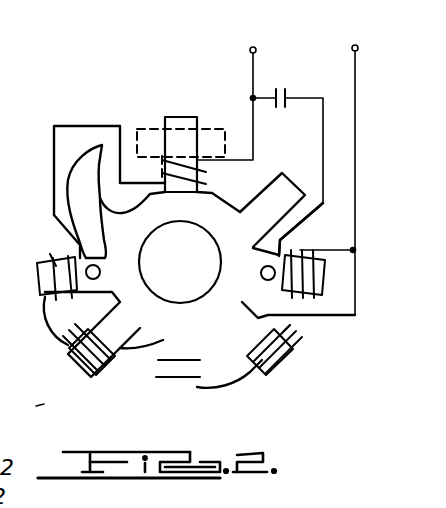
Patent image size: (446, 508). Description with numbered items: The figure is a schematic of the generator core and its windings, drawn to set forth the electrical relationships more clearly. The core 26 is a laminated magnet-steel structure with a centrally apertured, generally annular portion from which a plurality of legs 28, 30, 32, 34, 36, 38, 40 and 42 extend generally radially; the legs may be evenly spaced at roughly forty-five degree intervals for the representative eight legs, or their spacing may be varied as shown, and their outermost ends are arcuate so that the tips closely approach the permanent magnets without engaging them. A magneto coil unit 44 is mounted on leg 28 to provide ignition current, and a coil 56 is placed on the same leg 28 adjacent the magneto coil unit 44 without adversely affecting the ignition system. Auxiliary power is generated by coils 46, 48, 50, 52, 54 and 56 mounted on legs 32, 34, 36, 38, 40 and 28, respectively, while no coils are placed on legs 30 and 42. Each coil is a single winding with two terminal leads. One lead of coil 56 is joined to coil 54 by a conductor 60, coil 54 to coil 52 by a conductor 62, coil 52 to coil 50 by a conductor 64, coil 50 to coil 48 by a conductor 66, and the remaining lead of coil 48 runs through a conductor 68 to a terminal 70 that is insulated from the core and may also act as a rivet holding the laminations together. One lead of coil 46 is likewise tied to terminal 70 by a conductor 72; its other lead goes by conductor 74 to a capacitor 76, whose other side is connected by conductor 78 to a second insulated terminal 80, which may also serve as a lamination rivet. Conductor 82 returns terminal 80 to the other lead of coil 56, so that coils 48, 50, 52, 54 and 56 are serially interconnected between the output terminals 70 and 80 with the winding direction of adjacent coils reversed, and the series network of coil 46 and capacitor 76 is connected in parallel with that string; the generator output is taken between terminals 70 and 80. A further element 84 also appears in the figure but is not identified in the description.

The core 26 is at (135, 233).
The leg 28 is at (186, 117).
The leg 30 is at (282, 175).
The leg 32 is at (317, 277).
The leg 34 is at (285, 367).
The leg 36 is at (185, 407).
The leg 38 is at (80, 362).
The leg 40 is at (38, 277).
The leg 42 is at (77, 160).
The magneto coil unit 44 is at (213, 128).
The coil 46 is at (300, 251).
The coil 48 is at (279, 333).
The coil 50 is at (162, 377).
The coil 52 is at (108, 360).
The coil 54 is at (50, 256).
The coil 56 is at (206, 184).
The conductor 60 is at (100, 125).
The conductor 62 is at (53, 322).
The conductor 64 is at (142, 343).
The conductor 66 is at (240, 386).
The conductor 68 is at (338, 319).
The terminal 70 is at (358, 47).
The conductor 72 is at (337, 249).
The conductor 74 is at (323, 135).
The capacitor 76 is at (283, 86).
The conductor 78 is at (266, 96).
The terminal 80 is at (256, 48).
The conductor 82 is at (206, 172).
The lead 84 is at (22, 412).